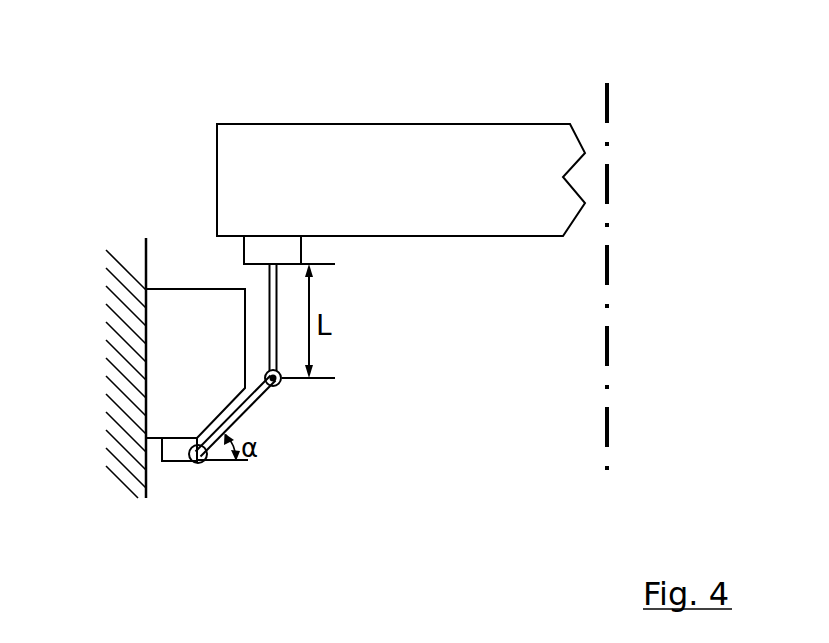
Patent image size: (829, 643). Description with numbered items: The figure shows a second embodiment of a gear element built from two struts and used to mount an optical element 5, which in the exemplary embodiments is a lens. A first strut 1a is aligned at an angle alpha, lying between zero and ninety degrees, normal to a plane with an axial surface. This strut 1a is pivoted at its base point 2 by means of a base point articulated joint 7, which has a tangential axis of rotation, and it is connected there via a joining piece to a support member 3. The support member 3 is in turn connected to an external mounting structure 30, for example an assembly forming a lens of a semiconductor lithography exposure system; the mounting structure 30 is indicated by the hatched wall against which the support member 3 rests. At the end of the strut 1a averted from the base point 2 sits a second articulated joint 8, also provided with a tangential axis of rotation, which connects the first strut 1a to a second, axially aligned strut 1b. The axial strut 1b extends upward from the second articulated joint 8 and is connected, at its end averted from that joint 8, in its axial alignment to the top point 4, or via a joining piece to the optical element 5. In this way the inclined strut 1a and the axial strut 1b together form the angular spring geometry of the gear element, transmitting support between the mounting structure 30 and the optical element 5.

The strut 1a is at (235, 418).
The second axially aligned strut 1b is at (273, 277).
The base point 2 is at (172, 450).
The support member 3 is at (161, 383).
The top point 4 is at (262, 247).
The optical element 5 is at (239, 184).
The base point articulated joint 7 is at (198, 456).
The second articulated joint 8 is at (279, 384).
The external mounting structure 30 is at (130, 312).